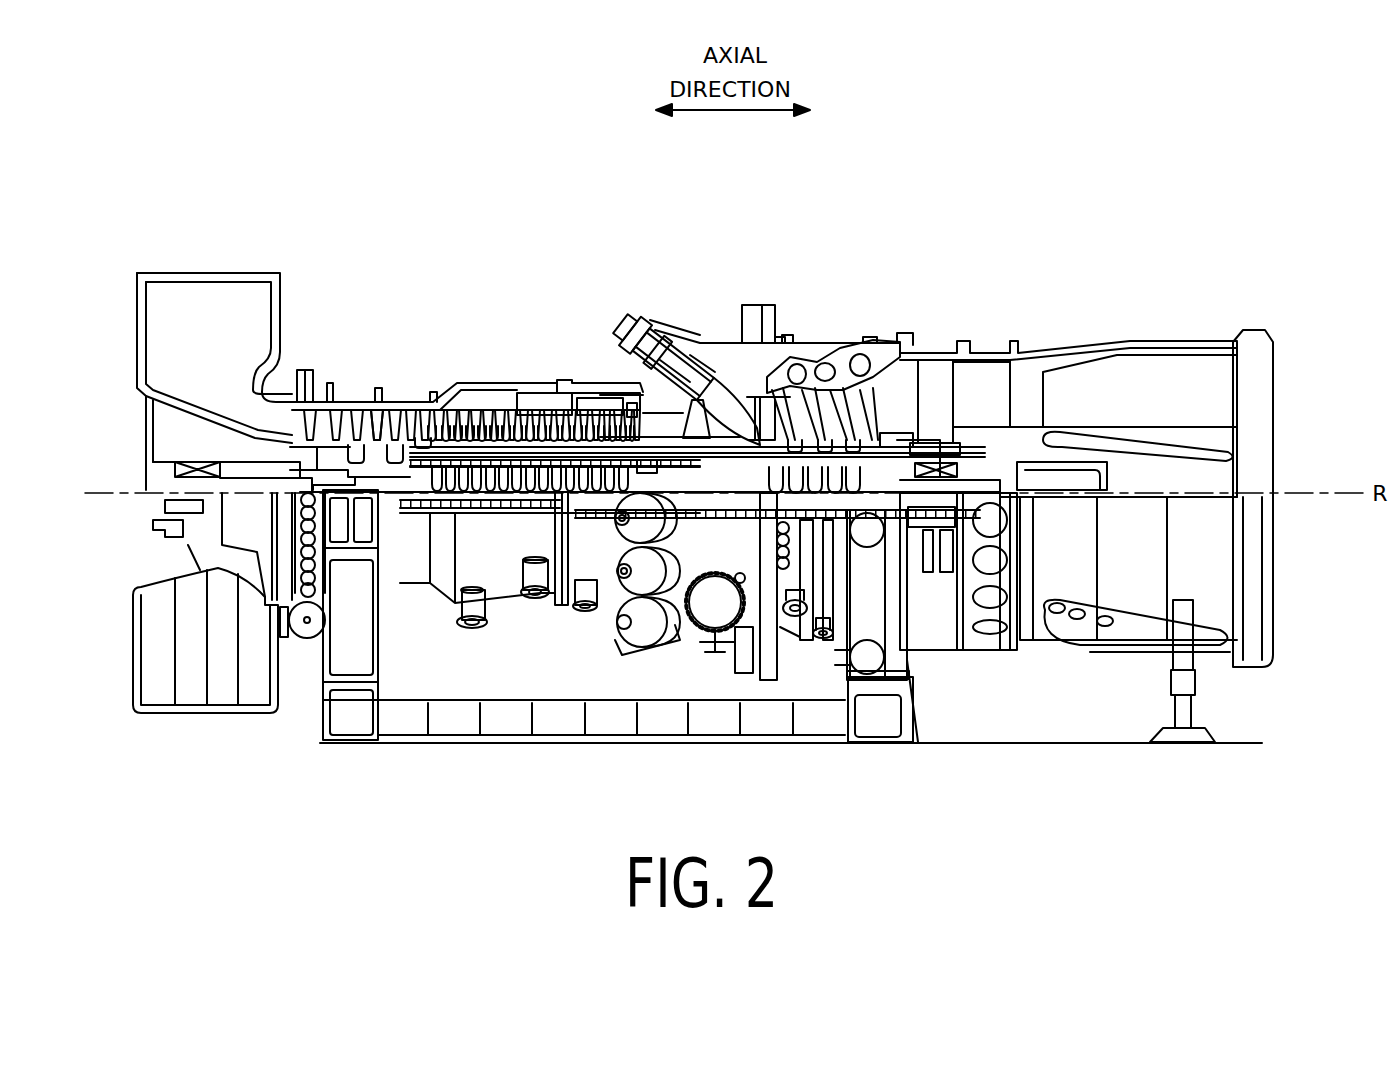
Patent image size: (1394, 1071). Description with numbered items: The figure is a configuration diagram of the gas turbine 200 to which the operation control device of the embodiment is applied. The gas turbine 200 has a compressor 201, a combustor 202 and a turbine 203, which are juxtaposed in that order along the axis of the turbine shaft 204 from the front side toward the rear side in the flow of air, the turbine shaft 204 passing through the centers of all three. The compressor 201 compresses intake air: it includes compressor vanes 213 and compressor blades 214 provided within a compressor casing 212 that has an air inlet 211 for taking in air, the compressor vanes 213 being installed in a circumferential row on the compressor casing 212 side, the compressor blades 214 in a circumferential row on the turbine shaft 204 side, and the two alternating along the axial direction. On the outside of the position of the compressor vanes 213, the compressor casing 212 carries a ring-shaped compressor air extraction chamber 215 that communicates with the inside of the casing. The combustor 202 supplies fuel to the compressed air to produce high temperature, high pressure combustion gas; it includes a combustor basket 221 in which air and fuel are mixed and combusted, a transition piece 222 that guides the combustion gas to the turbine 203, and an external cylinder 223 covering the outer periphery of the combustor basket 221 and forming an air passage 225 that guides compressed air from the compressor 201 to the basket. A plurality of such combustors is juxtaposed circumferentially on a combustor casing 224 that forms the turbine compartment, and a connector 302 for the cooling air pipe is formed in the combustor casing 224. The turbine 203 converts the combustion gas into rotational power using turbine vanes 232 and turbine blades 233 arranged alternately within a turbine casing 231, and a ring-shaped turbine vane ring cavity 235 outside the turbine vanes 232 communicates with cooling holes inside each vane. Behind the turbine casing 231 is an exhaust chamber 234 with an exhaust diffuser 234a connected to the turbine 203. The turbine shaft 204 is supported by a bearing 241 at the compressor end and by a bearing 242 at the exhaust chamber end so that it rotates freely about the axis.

The gas turbine 200 is at (887, 274).
The compressor 201 is at (358, 350).
The combustor 202 is at (634, 316).
The turbine 203 is at (912, 328).
The turbine shaft 204 is at (672, 462).
The air inlet 211 is at (152, 333).
The compressor casing 212 is at (540, 408).
The compressor vanes 213 is at (360, 400).
The compressor blades 214 is at (412, 408).
The compressor air extraction chamber 215 is at (533, 397).
The combustor basket 221 is at (683, 345).
The transition piece 222 is at (700, 375).
The external cylinder 223 is at (662, 350).
The combustor casing 224 is at (727, 360).
The air passage 225 is at (740, 340).
The turbine casing 231 is at (862, 342).
The turbine vanes 232 is at (758, 304).
The turbine blades 233 is at (788, 380).
The exhaust chamber 234 is at (1127, 338).
The exhaust diffuser 234a is at (997, 390).
The turbine vane ring cavity 235 is at (830, 348).
The bearing 241 is at (172, 466).
The bearing 242 is at (1000, 462).
The connector 302 is at (712, 628).